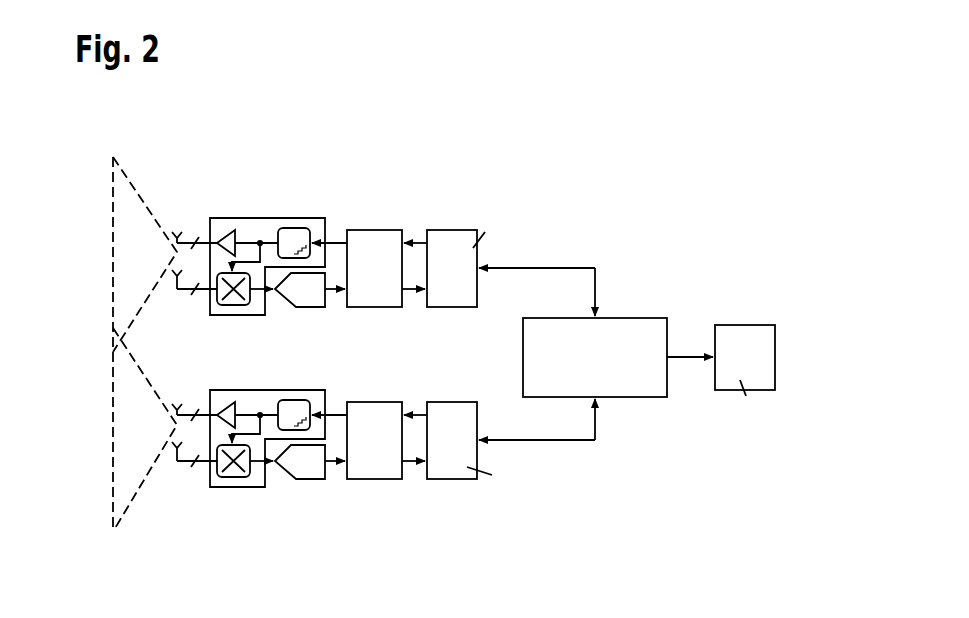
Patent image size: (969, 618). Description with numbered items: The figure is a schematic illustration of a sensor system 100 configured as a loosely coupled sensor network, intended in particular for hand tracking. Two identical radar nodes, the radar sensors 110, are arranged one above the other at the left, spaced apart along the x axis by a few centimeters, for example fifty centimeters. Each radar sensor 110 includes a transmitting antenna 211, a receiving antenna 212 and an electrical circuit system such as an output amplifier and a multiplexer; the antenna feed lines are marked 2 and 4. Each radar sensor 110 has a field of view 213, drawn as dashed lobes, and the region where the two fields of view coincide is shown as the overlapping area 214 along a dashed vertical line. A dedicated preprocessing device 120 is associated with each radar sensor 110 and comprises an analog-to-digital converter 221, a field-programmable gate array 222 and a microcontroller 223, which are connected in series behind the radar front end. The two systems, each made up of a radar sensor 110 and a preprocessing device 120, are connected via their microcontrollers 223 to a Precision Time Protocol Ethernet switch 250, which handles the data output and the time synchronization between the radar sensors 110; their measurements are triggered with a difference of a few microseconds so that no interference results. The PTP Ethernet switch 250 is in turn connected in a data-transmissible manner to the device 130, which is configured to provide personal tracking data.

The sensor system 100 is at (544, 132).
The radar sensor 110 is at (259, 214).
The preprocessing device 120 is at (371, 212).
The device 130 is at (768, 370).
The transmitting antenna 211 is at (177, 238).
The receiving antenna 212 is at (177, 276).
The field of view 213 is at (140, 187).
The overlapping area 214 is at (113, 341).
The analog-to-digital converter 221 is at (305, 292).
The field-programmable gate array 222 is at (395, 281).
The microcontroller 223 is at (475, 281).
The Precision Time Protocol Ethernet switch 250 is at (573, 371).
The antenna feed line 2 is at (197, 319).
The antenna feed line 4 is at (197, 365).